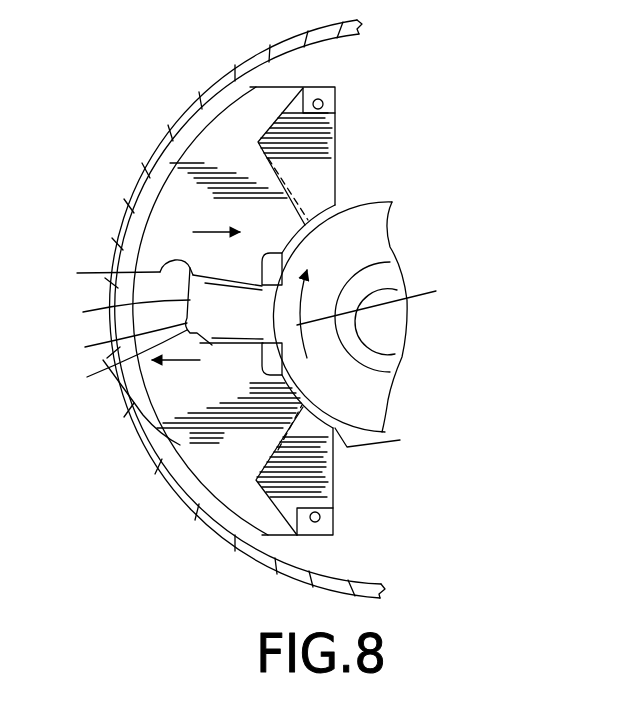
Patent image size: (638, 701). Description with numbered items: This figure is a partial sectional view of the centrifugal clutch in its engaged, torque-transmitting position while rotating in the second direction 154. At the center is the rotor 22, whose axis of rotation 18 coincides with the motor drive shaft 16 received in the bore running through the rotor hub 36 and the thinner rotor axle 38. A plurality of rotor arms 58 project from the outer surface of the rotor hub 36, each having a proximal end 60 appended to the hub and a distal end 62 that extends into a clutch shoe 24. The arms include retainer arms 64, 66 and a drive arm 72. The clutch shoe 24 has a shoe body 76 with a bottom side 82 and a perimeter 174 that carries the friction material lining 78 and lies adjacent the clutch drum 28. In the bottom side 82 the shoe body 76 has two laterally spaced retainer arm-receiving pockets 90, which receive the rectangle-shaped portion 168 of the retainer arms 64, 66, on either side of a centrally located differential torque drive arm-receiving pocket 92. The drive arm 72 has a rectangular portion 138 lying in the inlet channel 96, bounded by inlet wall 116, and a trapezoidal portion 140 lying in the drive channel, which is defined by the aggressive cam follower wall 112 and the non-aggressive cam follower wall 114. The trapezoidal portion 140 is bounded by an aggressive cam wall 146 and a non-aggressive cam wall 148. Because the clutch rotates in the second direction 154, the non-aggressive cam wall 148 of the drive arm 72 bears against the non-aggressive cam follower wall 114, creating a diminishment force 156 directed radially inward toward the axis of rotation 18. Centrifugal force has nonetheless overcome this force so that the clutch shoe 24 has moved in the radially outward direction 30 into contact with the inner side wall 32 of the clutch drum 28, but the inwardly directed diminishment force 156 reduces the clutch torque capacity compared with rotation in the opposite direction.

The motor drive shaft 16 is at (392, 338).
The axis of rotation 18 is at (395, 314).
The rotor 22 is at (380, 181).
The clutch shoe 24 is at (243, 120).
The clutch drum 28 is at (267, 50).
The radially outward direction 30 is at (168, 367).
The inner side wall 32 is at (336, 40).
The rotor hub 36 is at (378, 221).
The rotor axle 38 is at (388, 268).
The rotor arm 58 is at (338, 196).
The proximal end 60 is at (281, 370).
The distal end 62 is at (193, 272).
The retainer arm 64 is at (322, 145).
The retainer arm 66 is at (347, 447).
The drive arm 72 is at (234, 332).
The shoe body 76 is at (223, 128).
The friction material lining 78 is at (170, 163).
The bottom side 82 is at (180, 445).
The retainer arm-receiving pocket 90 is at (268, 150).
The differential torque drive arm-receiving pocket 92 is at (140, 235).
The inlet channel 96 is at (283, 255).
The aggressive cam follower wall 112 is at (123, 387).
The non-aggressive cam follower wall 114 is at (100, 273).
The inlet wall 116 is at (245, 341).
The rectangular portion 138 is at (220, 325).
The trapezoidal portion 140 is at (116, 313).
The aggressive cam wall 146 is at (115, 343).
The non-aggressive cam wall 148 is at (212, 278).
The second direction 154 is at (386, 299).
The diminishment force 156 is at (213, 227).
The rectangle-shaped portion 168 is at (322, 462).
The perimeter 174 is at (235, 542).